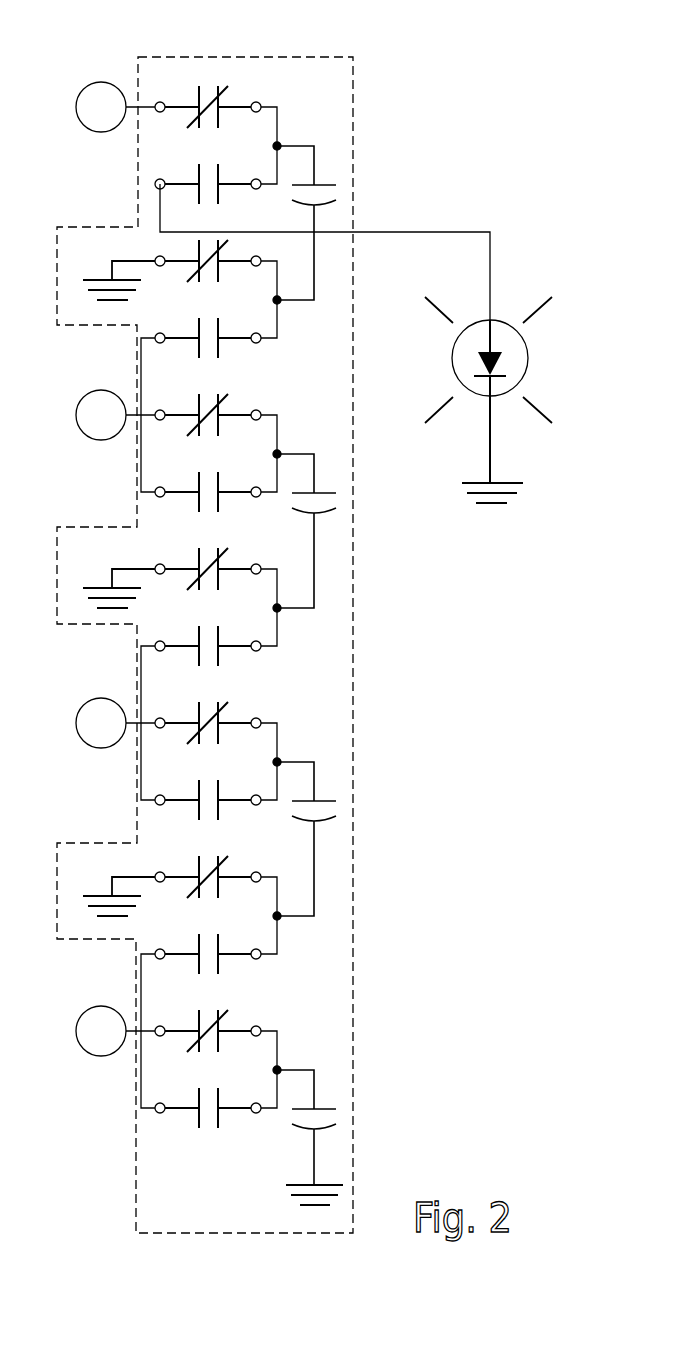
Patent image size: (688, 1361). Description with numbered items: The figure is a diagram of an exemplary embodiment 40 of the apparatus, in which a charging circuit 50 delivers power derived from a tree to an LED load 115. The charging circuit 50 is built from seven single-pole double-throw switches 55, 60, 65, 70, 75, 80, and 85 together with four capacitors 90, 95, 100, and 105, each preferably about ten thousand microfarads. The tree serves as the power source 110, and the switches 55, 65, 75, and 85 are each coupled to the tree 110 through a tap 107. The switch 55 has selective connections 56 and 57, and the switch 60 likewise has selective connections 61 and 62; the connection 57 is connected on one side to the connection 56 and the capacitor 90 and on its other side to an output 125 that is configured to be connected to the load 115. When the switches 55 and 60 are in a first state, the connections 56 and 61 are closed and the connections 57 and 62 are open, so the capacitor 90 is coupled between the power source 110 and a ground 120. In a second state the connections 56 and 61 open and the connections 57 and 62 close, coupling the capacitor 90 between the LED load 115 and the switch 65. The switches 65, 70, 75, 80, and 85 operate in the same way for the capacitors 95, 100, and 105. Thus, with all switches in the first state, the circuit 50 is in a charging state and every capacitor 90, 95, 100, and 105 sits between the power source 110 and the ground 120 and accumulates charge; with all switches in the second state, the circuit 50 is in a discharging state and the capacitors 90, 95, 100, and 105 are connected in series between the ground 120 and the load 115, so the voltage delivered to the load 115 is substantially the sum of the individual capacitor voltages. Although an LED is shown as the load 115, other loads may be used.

The exemplary embodiment 40 is at (560, 99).
The charging circuit 50 is at (353, 78).
The switch 55 is at (236, 103).
The selective connection 56 is at (220, 102).
The selective connection 57 is at (198, 175).
The switch 60 is at (227, 304).
The selective connection 61 is at (197, 262).
The selective connection 62 is at (193, 342).
The switch 65 is at (285, 418).
The switch 70 is at (290, 648).
The switch 75 is at (289, 716).
The switch 80 is at (266, 969).
The switch 85 is at (280, 1018).
The capacitor 90 is at (322, 183).
The capacitor 95 is at (318, 514).
The capacitor 100 is at (320, 797).
The capacitor 105 is at (320, 1107).
The tap 107 is at (131, 104).
The power source 110 is at (85, 89).
The LED load 115 is at (530, 345).
The ground 120 is at (104, 279).
The output 125 is at (353, 232).